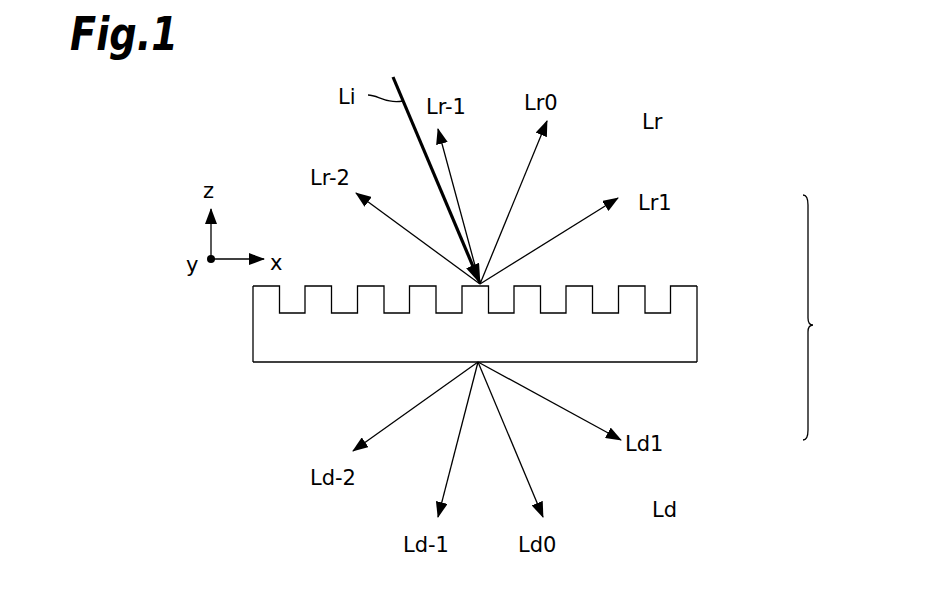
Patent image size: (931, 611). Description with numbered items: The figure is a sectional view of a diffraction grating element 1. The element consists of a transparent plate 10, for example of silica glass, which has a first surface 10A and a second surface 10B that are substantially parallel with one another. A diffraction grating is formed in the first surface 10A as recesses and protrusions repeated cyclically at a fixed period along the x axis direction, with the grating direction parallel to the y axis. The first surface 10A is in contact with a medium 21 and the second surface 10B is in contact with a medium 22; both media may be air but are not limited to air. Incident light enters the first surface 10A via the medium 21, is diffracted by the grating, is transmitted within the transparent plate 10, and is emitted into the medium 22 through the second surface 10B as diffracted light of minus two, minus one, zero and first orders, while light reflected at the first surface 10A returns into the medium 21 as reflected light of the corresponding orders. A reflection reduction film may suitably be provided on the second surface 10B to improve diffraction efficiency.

The diffraction grating element 1 is at (832, 341).
The transparent plate 10 is at (522, 327).
The first surface 10A is at (653, 290).
The second surface 10B is at (667, 362).
The medium 21 is at (627, 242).
The medium 22 is at (640, 403).